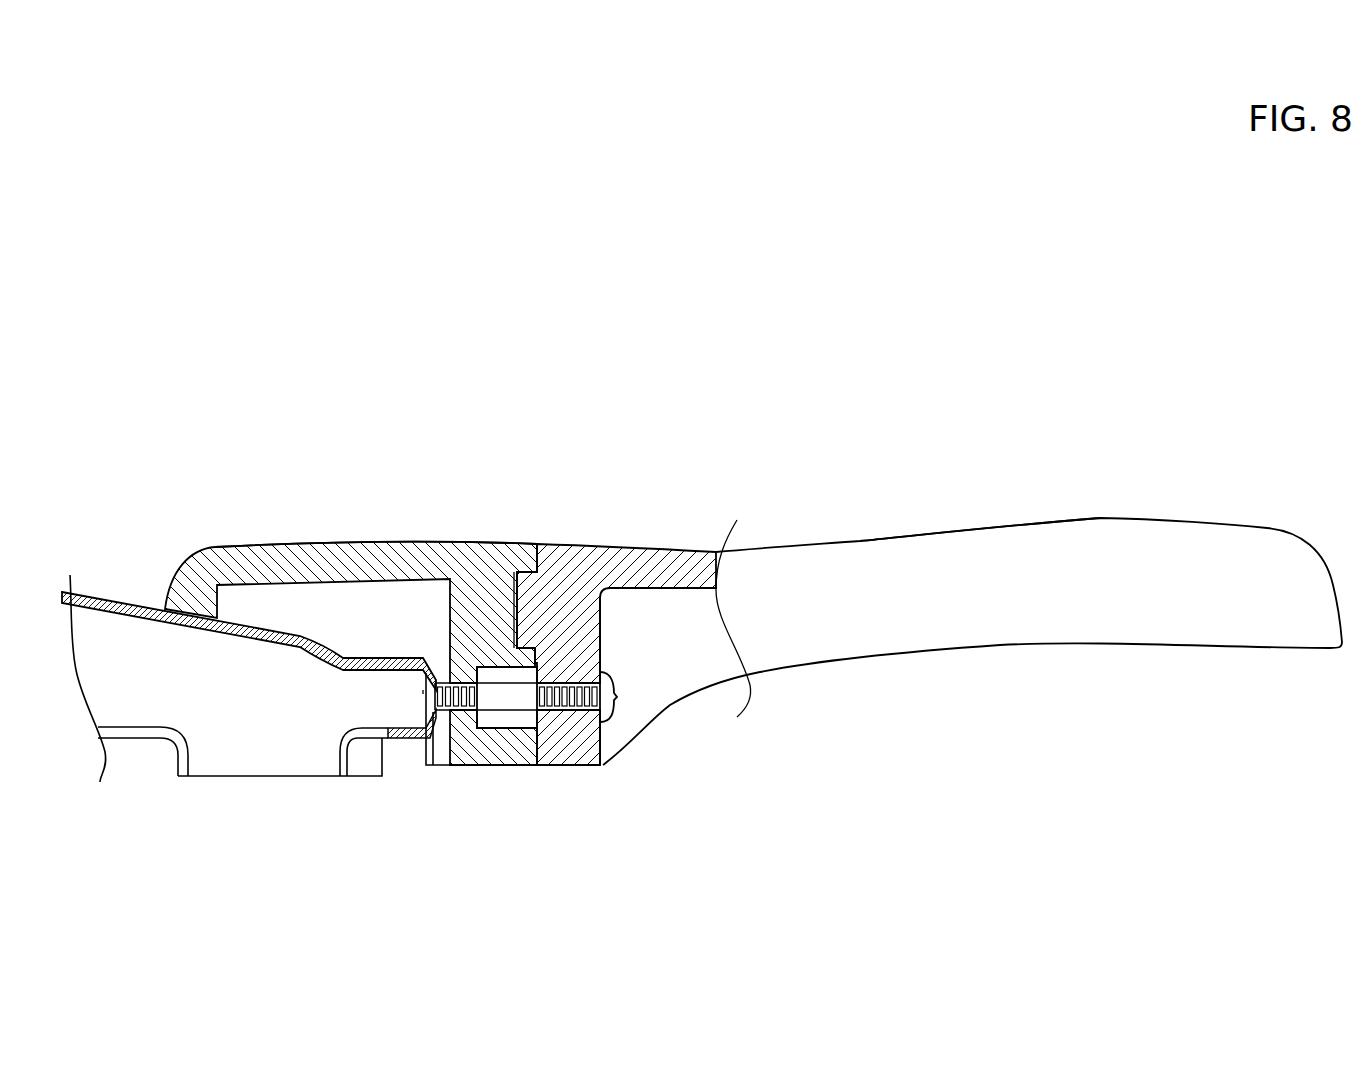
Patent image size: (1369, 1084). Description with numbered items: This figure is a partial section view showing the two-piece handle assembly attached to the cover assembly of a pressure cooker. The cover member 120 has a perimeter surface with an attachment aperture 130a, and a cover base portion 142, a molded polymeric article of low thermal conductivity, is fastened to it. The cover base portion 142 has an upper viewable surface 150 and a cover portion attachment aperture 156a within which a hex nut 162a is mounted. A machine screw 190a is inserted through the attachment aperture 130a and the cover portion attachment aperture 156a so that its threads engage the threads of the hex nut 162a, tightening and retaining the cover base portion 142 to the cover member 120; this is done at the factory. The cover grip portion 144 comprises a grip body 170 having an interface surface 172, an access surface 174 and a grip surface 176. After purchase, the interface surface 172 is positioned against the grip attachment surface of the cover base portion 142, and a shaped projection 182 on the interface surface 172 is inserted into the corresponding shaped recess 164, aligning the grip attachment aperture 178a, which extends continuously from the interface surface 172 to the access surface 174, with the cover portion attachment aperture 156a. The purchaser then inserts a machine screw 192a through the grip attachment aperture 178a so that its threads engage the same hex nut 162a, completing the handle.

The cover member 120 is at (108, 594).
The attachment aperture 130a is at (434, 718).
The cover base portion 142 is at (462, 545).
The cover grip portion 144 is at (1173, 526).
The upper viewable surface 150 is at (418, 545).
The cover portion attachment aperture 156a is at (458, 678).
The hex nut 162a is at (508, 718).
The shaped recess 164 is at (520, 570).
The grip body 170 is at (862, 550).
The interface surface 172 is at (548, 764).
The access surface 174 is at (600, 762).
The grip surface 176 is at (1013, 533).
The grip attachment aperture 178a is at (578, 684).
The shaped projection 182 is at (495, 593).
The machine screw 190a is at (423, 692).
The machine screw 192a is at (613, 702).